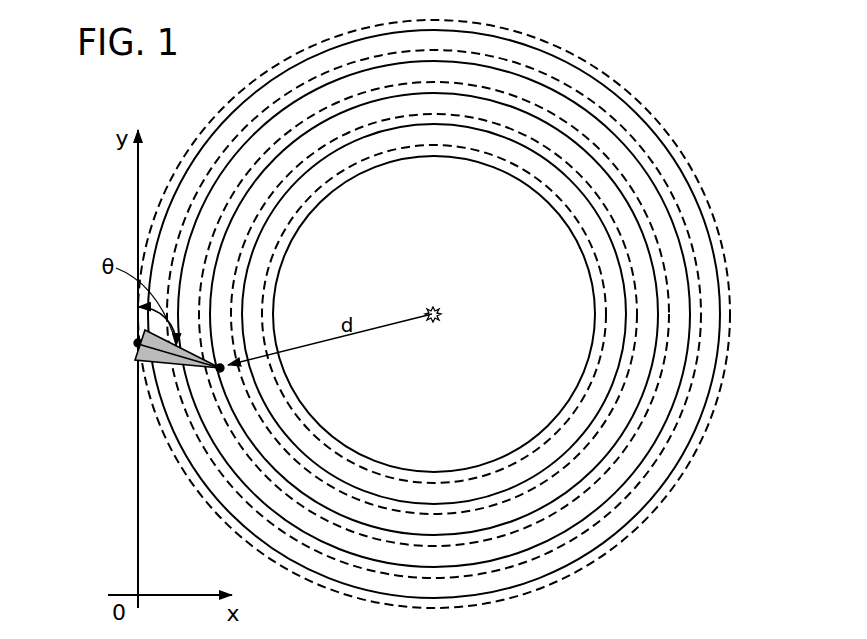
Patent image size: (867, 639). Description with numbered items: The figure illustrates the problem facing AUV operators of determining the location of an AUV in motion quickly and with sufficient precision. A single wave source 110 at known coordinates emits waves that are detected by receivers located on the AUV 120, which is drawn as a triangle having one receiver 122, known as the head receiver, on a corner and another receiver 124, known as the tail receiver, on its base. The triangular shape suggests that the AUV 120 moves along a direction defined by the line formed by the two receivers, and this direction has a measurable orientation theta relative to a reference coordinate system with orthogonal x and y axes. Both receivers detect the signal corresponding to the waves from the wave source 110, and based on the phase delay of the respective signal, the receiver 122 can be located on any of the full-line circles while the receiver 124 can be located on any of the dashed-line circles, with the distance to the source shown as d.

The wave source 110 is at (439, 307).
The AUV 120 is at (136, 361).
The head receiver 122 is at (218, 370).
The tail receiver 124 is at (136, 343).